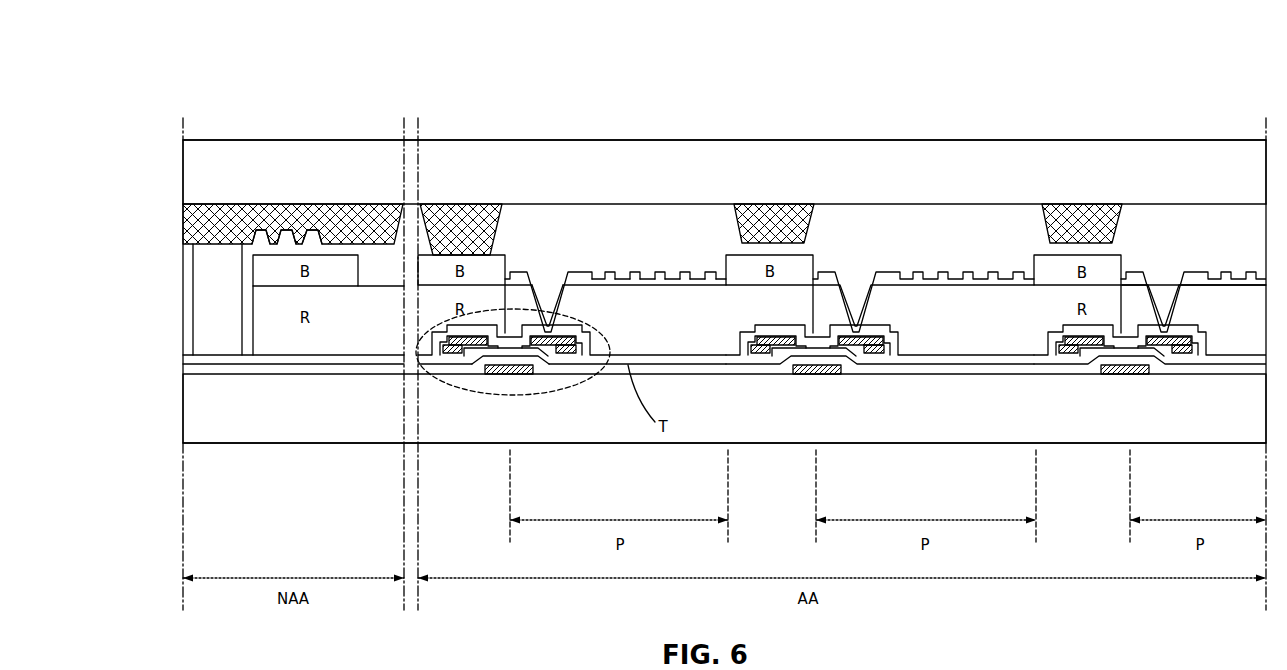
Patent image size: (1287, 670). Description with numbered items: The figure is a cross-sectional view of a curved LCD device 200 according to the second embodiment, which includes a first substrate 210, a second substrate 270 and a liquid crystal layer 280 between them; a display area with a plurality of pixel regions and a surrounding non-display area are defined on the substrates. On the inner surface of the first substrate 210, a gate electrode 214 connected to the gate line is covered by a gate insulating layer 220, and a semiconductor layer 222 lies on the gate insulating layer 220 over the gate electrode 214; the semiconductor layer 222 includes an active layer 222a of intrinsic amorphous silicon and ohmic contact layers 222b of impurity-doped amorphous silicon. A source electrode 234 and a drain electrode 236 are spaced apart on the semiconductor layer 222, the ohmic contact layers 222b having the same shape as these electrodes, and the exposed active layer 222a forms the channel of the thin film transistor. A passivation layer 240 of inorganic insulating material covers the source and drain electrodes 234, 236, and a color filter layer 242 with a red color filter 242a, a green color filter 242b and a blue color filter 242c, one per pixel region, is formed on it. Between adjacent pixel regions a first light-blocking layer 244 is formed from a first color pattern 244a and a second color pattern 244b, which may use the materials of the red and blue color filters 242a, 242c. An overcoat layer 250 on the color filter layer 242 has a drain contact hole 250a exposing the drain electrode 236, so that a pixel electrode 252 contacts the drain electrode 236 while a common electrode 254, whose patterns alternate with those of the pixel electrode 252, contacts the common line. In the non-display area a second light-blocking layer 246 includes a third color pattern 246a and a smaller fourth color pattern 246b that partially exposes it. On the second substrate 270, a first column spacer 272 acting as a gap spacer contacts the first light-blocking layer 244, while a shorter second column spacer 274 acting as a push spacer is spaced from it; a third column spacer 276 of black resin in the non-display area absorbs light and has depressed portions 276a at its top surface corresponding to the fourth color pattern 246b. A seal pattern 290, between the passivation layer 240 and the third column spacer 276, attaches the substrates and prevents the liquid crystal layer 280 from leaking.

The curved LCD device 200 is at (282, 107).
The first substrate 210 is at (1252, 436).
The gate electrode 214 is at (505, 374).
The gate insulating layer 220 is at (912, 376).
The semiconductor layer 222 is at (523, 418).
The active layer 222a is at (530, 352).
The ohmic contact layers 222b is at (542, 352).
The source electrode 234 is at (445, 345).
The drain electrode 236 is at (580, 347).
The passivation layer 240 is at (957, 365).
The color filter layer 242 is at (935, 170).
The red color filter 242a is at (633, 297).
The green color filter 242b is at (937, 300).
The blue color filter 242c is at (1192, 197).
The first light-blocking layer 244 is at (733, 239).
The first color pattern 244a is at (508, 270).
The second color pattern 244b is at (490, 297).
The second light-blocking layer 246 is at (328, 250).
The third color pattern 246a is at (375, 322).
The fourth color pattern 246b is at (335, 275).
The overcoat layer 250 is at (703, 287).
The drain contact hole 250a is at (549, 275).
The pixel electrode 252 is at (608, 271).
The common electrode 254 is at (620, 271).
The second substrate 270 is at (1255, 200).
The first column spacer 272 is at (452, 217).
The second column spacer 274 is at (778, 225).
The third column spacer 276 is at (215, 212).
The depressed portions 276a is at (285, 218).
The liquid crystal layer 280 is at (1199, 228).
The seal pattern 290 is at (222, 346).